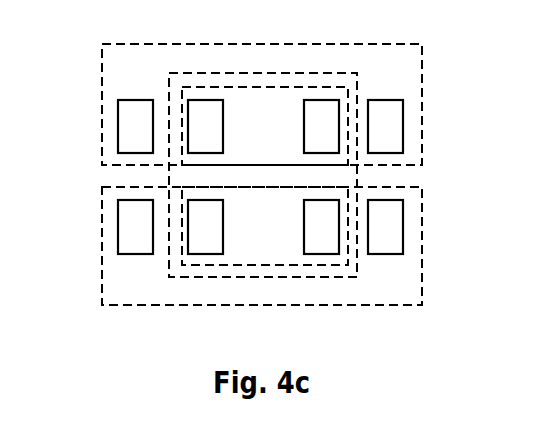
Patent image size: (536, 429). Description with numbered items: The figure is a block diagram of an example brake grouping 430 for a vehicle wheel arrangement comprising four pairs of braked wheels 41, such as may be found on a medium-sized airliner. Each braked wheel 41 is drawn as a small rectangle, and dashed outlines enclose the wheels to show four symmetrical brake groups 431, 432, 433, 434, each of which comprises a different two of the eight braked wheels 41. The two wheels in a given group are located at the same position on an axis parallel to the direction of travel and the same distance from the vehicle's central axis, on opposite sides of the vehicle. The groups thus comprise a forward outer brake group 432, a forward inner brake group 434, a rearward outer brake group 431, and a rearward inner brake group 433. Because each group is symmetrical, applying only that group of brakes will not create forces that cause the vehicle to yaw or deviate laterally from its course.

The battery module arrangement 430 is at (449, 70).
The rearward outer brake group 431 is at (243, 68).
The forward outer brake group 432 is at (243, 300).
The rearward inner brake group 433 is at (243, 128).
The forward inner brake group 434 is at (243, 233).
The braked wheels 41 is at (207, 130).